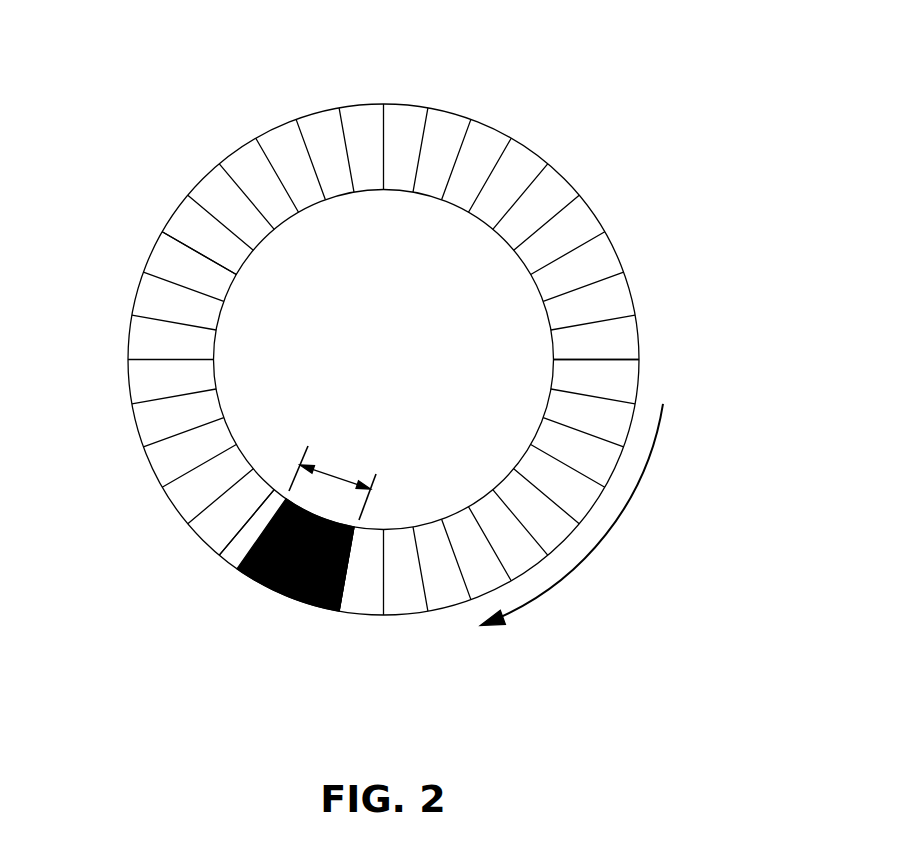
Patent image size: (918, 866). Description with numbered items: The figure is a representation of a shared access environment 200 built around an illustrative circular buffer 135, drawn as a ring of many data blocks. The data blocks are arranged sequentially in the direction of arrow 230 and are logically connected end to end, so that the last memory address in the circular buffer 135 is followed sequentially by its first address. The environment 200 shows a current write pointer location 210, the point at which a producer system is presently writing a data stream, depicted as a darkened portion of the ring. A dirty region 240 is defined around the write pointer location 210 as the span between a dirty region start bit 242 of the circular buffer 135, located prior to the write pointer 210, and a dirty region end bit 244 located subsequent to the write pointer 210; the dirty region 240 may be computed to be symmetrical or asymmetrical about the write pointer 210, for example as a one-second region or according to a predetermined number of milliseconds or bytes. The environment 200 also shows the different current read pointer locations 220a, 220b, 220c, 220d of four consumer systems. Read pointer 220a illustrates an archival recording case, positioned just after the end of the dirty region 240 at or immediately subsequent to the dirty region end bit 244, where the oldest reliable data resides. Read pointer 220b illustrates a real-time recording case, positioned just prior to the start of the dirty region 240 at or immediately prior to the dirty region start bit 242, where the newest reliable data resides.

The circular buffer 135 is at (403, 106).
The shared access environment 200 is at (593, 40).
The write pointer location 210 is at (286, 624).
The read pointer 220a is at (216, 584).
The read pointer 220b is at (342, 636).
The read pointer location 220c is at (184, 161).
The read pointer location 220d is at (663, 324).
The arrow 230 is at (585, 553).
The dirty region 240 is at (358, 444).
The dirty region start bit 242 is at (428, 463).
The dirty region end bit 244 is at (302, 451).